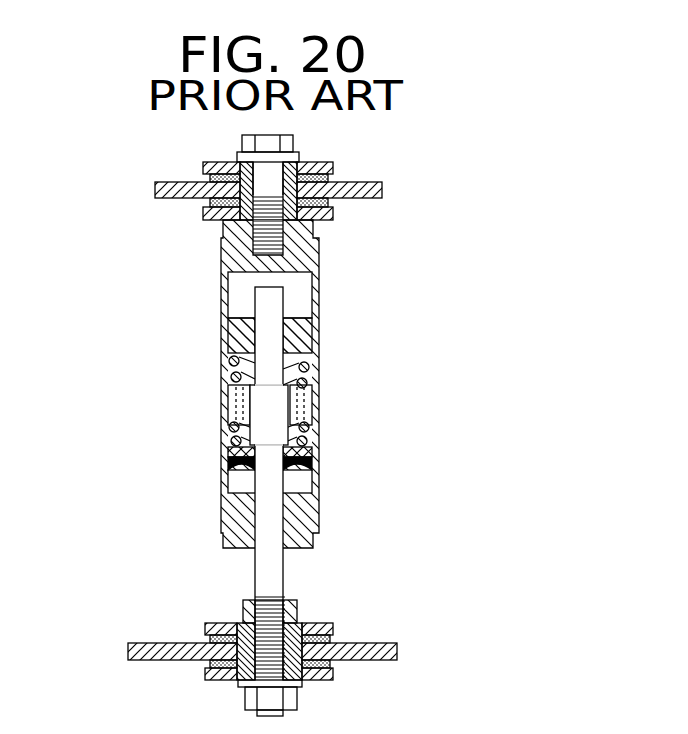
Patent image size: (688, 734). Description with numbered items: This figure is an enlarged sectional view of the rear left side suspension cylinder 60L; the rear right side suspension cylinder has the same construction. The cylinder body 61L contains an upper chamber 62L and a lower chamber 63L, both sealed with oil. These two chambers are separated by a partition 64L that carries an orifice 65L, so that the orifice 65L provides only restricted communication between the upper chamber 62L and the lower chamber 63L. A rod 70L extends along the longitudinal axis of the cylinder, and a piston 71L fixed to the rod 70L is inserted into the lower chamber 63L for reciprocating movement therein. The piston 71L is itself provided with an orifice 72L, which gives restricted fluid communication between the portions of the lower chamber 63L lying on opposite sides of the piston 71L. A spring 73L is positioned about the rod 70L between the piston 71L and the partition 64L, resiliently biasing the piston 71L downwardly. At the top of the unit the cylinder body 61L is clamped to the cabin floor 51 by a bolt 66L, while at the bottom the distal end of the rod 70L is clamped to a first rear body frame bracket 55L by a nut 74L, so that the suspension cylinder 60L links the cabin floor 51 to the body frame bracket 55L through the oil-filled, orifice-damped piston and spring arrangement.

The bolt 66L is at (238, 151).
The cabin floor 51 is at (355, 182).
The rear left side suspension cylinder 60L is at (438, 215).
The cylinder body 61L is at (318, 247).
The upper chamber 62L is at (230, 288).
The lower chamber 63L is at (302, 487).
The partition 64L is at (306, 331).
The orifice 65L is at (232, 329).
The spring 73L is at (302, 383).
The orifice 72L is at (302, 457).
The piston 71L is at (232, 465).
The rod 70L is at (263, 566).
The first rear body frame bracket 55L is at (390, 660).
The nut 74L is at (246, 701).